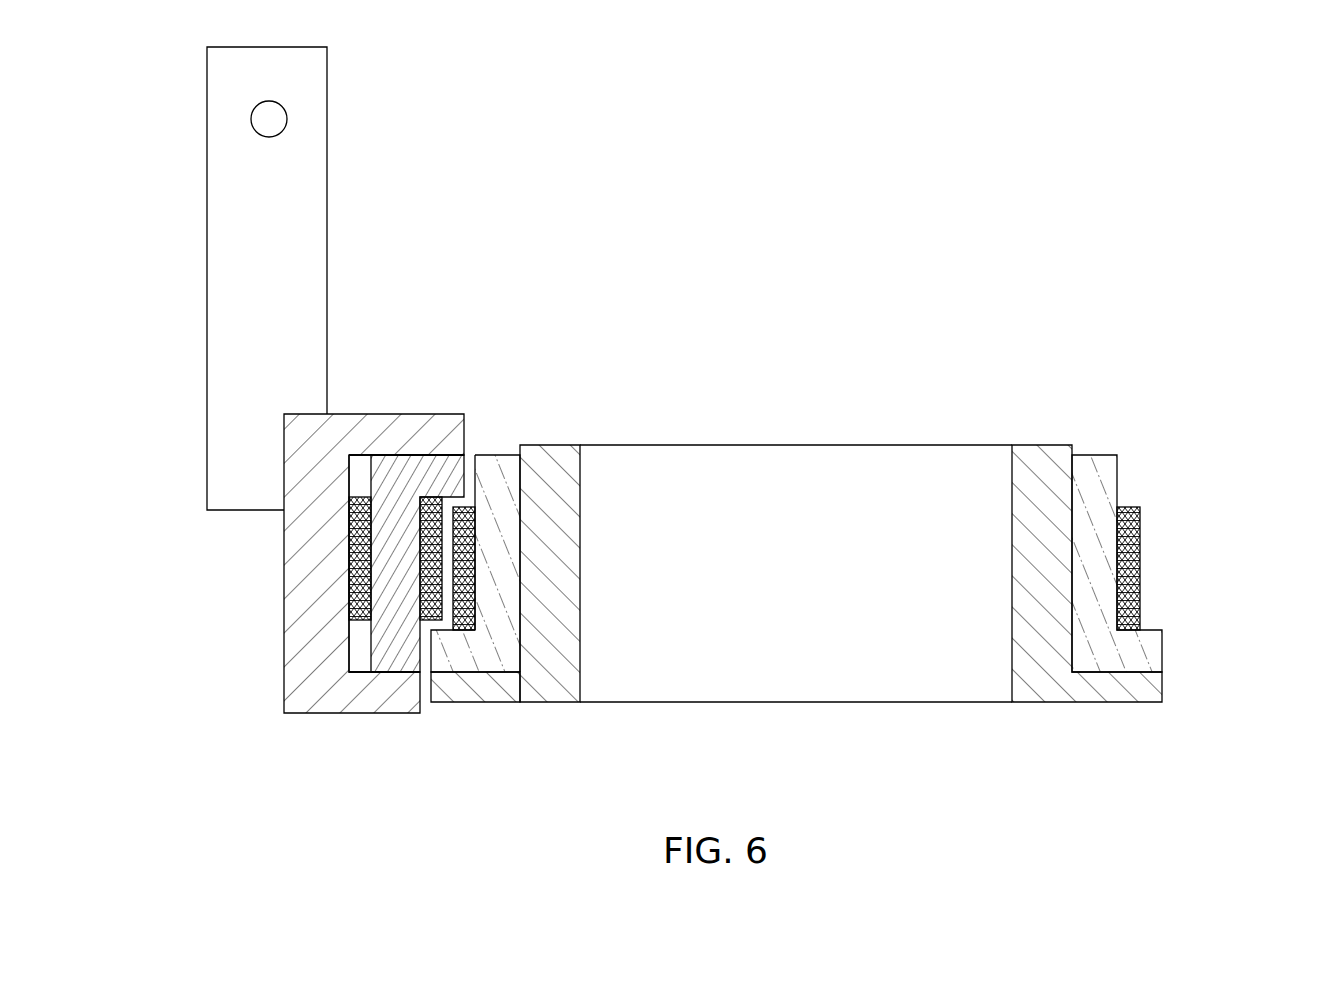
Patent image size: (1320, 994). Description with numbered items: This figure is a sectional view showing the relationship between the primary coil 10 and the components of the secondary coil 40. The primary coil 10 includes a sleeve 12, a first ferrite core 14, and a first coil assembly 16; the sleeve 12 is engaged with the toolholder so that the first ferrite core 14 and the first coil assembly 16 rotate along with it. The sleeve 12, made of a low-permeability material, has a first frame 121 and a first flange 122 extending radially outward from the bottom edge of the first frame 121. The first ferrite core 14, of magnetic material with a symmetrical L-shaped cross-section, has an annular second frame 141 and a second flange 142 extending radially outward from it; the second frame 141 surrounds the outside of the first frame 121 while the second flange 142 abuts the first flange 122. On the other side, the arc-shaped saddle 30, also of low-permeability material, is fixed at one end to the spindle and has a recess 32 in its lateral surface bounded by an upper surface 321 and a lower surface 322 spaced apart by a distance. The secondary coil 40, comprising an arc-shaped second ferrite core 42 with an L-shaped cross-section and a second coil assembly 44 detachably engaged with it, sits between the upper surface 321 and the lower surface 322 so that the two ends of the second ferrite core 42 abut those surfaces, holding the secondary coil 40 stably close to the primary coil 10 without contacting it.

The primary coil 10 is at (794, 582).
The sleeve 12 is at (796, 647).
The first frame 121 is at (557, 675).
The first flange 122 is at (475, 734).
The first ferrite core 14 is at (425, 679).
The second frame 141 is at (490, 563).
The second flange 142 is at (450, 653).
The first coil assembly 16 is at (1140, 557).
The saddle 30 is at (312, 578).
The recess 32 is at (351, 564).
The upper surface 321 is at (437, 455).
The lower surface 322 is at (352, 677).
The secondary coil 40 is at (406, 462).
The second ferrite core 42 is at (395, 545).
The second coil assembly 44 is at (357, 505).